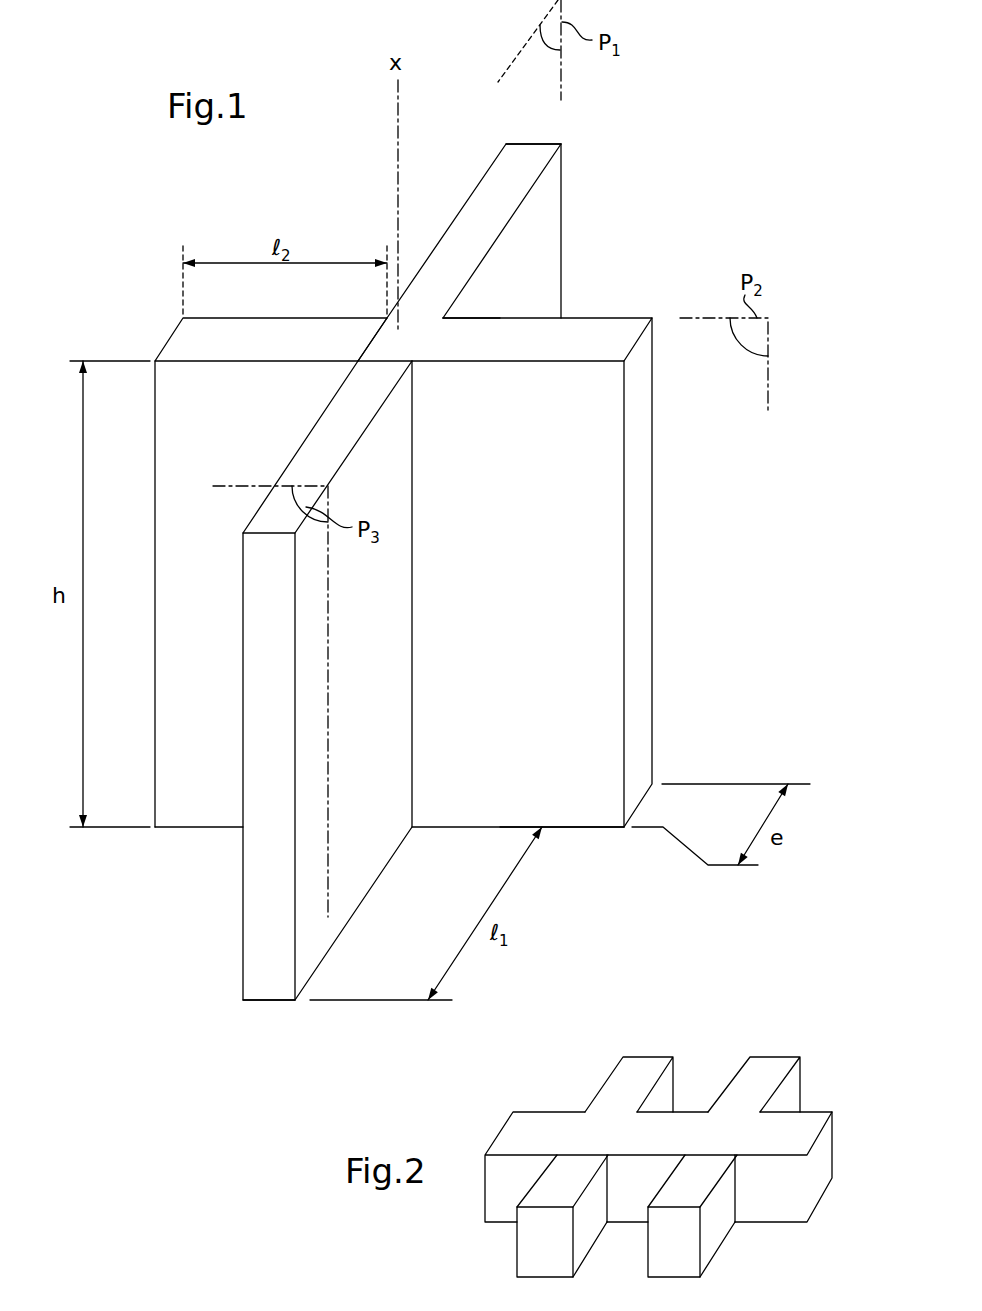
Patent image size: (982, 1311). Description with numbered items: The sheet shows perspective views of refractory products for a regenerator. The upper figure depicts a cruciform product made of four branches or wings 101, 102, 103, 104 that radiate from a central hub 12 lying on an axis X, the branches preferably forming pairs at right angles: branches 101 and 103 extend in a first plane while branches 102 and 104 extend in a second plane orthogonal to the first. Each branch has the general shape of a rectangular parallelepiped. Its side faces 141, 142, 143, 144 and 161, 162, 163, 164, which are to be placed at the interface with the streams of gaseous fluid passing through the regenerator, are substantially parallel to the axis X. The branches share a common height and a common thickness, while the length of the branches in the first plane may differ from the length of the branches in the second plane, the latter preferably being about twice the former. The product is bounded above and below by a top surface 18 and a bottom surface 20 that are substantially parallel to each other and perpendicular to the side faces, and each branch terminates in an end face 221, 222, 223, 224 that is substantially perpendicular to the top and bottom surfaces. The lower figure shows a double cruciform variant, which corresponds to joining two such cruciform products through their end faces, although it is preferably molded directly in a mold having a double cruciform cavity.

The first branch 101 is at (535, 205).
The second branch 102 is at (223, 523).
The third branch 103 is at (314, 680).
The fourth branch 104 is at (595, 592).
The central hub 12 is at (372, 333).
The side face of first branch 141 is at (497, 305).
The side face of second branch 142 is at (218, 340).
The side face of third branch 143 is at (262, 652).
The side face of fourth branch 144 is at (602, 636).
The side face of first branch 161 is at (480, 226).
The side face of second branch 162 is at (172, 378).
The side face of third branch 163 is at (390, 470).
The side face of fourth branch 164 is at (608, 318).
The top surface 18 is at (505, 170).
The bottom surface 20 is at (578, 806).
The end face of first branch 221 is at (538, 228).
The end face of second branch 222 is at (178, 516).
The end face of third branch 223 is at (260, 963).
The end face of fourth branch 224 is at (640, 533).